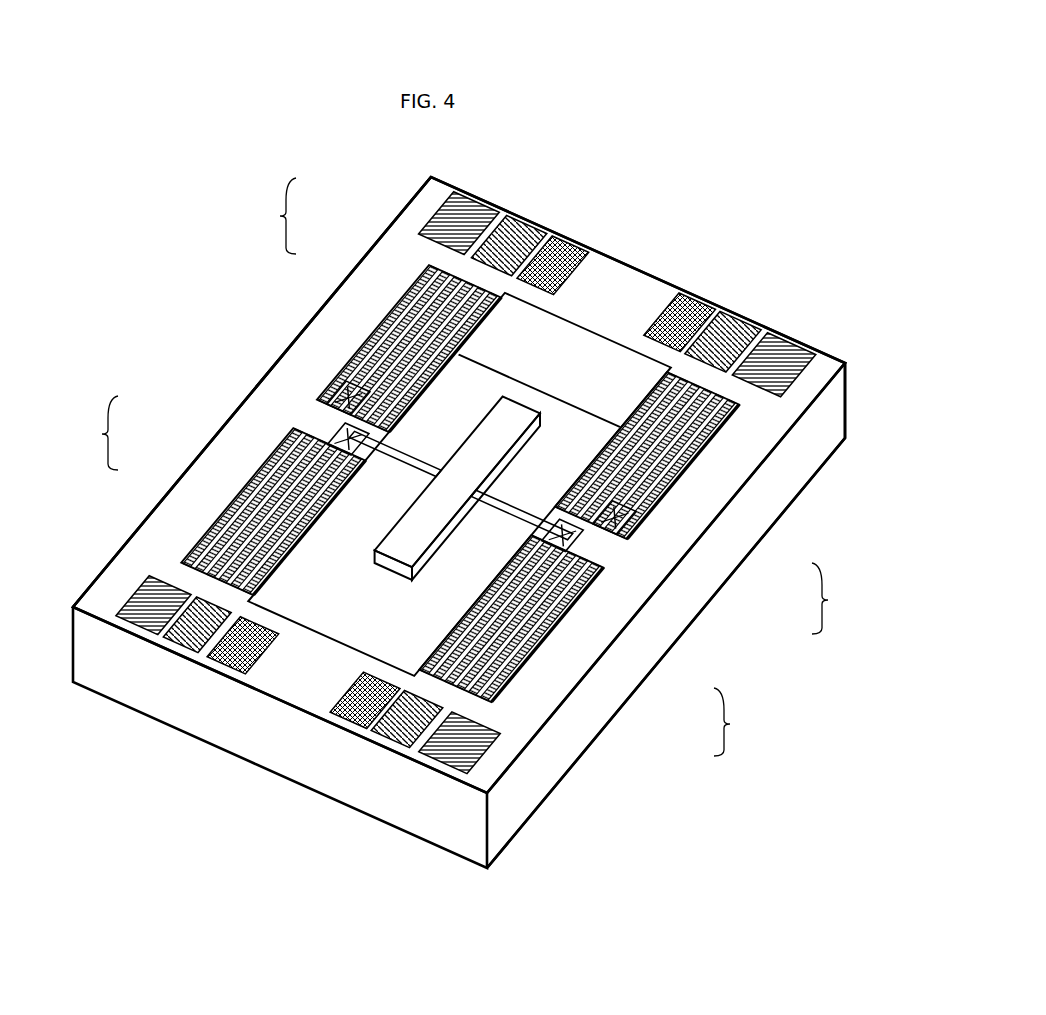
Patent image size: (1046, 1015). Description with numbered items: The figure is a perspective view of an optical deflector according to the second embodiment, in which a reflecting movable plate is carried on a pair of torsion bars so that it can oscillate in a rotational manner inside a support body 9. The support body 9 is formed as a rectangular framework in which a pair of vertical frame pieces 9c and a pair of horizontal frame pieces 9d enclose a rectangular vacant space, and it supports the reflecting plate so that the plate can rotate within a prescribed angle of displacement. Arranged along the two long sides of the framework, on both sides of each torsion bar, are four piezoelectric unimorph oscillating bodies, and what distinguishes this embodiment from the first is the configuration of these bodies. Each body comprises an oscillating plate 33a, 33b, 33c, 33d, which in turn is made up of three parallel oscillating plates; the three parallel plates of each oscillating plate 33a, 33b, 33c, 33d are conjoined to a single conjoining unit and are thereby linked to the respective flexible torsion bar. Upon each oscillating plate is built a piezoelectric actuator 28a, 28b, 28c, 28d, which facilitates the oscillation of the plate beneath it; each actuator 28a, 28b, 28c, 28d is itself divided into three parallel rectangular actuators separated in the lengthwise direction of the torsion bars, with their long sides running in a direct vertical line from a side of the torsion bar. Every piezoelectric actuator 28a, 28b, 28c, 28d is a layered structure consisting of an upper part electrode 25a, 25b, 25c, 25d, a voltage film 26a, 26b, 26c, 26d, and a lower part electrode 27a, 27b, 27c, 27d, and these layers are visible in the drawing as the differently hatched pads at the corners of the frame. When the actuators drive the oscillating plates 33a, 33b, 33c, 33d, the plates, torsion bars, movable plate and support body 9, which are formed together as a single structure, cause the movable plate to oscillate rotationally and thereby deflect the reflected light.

The support body 9 is at (196, 802).
The vertical frame piece 9c is at (766, 524).
The horizontal frame piece 9d is at (612, 266).
The upper part electrode 25a is at (468, 216).
The upper part electrode 25b is at (790, 352).
The upper part electrode 25c is at (150, 602).
The upper part electrode 25d is at (456, 752).
The voltage film 26a is at (512, 238).
The voltage film 26b is at (735, 330).
The voltage film 26c is at (186, 632).
The voltage film 26d is at (406, 722).
The lower part electrode 27a is at (552, 262).
The lower part electrode 27b is at (672, 312).
The lower part electrode 27c is at (242, 652).
The lower part electrode 27d is at (362, 702).
The piezoelectric actuator 28a is at (510, 218).
The piezoelectric actuator 28b is at (737, 315).
The piezoelectric actuator 28c is at (149, 677).
The piezoelectric actuator 28d is at (362, 770).
The oscillating plate 33a is at (272, 216).
The oscillating plate 33b is at (841, 598).
The oscillating plate 33c is at (94, 433).
The oscillating plate 33d is at (745, 722).